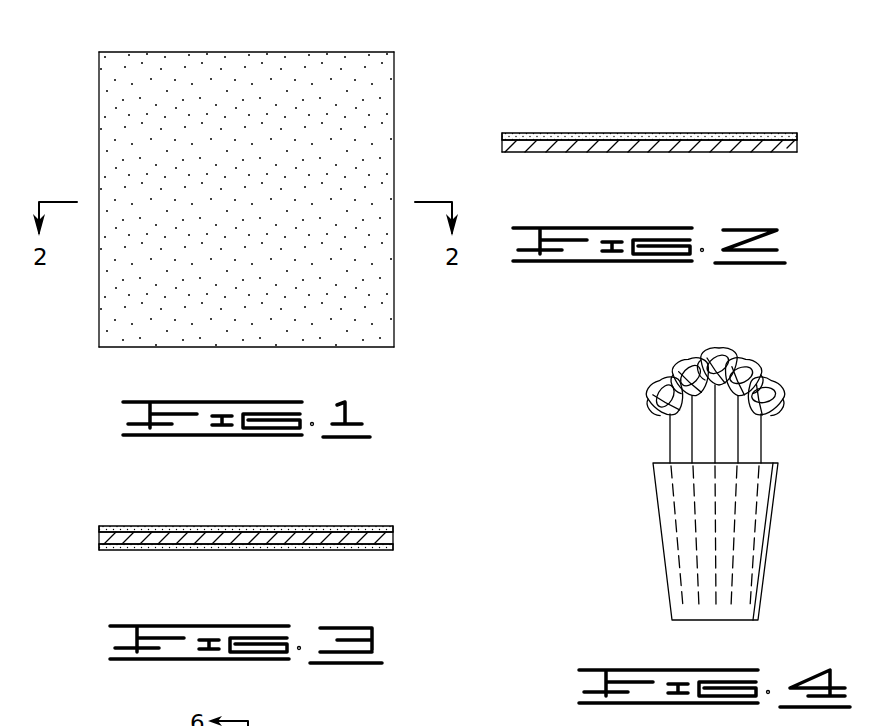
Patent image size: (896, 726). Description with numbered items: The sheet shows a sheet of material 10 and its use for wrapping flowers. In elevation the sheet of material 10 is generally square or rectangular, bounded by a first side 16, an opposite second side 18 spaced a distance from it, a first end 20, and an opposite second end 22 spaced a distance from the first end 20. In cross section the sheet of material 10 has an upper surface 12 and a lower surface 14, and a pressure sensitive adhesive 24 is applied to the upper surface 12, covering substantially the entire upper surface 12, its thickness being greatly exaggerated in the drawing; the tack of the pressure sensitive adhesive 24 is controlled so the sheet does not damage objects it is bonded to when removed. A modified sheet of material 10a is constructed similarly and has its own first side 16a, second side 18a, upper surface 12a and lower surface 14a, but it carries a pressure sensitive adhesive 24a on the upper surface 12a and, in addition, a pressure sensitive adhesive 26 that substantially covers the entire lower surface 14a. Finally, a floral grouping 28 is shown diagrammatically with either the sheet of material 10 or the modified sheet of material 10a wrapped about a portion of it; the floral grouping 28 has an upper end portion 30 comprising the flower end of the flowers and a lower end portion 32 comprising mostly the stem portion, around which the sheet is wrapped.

In FIG. 1, the sheet of material 10 is at (421, 73).
In FIG. 2, the sheet of material 10 is at (595, 96).
In FIG. 4, the sheet of material 10 is at (654, 537).
In FIG. 3, the modified sheet of material 10a is at (266, 513).
In FIG. 4, the modified sheet of material 10a is at (715, 541).
In FIG. 1, the upper surface 12 is at (350, 308).
In FIG. 2, the upper surface 12 is at (657, 140).
In FIG. 3, the upper surface 12a is at (370, 532).
In FIG. 2, the lower surface 14 is at (678, 153).
In FIG. 3, the lower surface 14a is at (282, 545).
In FIG. 1, the first side 16 is at (99, 296).
In FIG. 2, the first side 16 is at (502, 147).
In FIG. 3, the first side 16a is at (99, 535).
In FIG. 1, the second side 18 is at (394, 278).
In FIG. 2, the second side 18 is at (797, 147).
In FIG. 3, the second side 18a is at (393, 537).
In FIG. 1, the first end 20 is at (211, 52).
In FIG. 1, the second end 22 is at (125, 348).
In FIG. 1, the pressure sensitive adhesive 24 is at (280, 322).
In FIG. 2, the pressure sensitive adhesive 24 is at (750, 134).
In FIG. 3, the pressure sensitive adhesive 24a is at (163, 526).
In FIG. 3, the pressure sensitive adhesive 26 is at (150, 550).
In FIG. 4, the floral grouping 28 is at (664, 433).
In FIG. 4, the upper end portion 30 is at (769, 433).
In FIG. 4, the lower end portion 32 is at (692, 592).